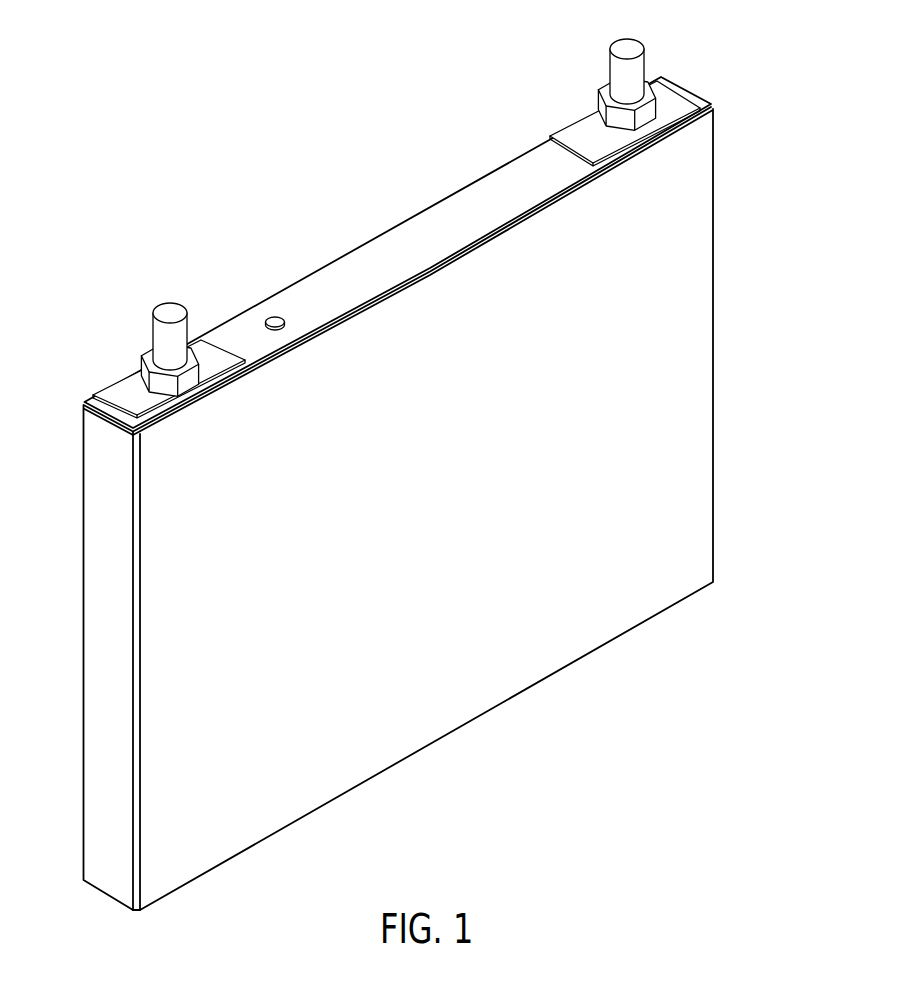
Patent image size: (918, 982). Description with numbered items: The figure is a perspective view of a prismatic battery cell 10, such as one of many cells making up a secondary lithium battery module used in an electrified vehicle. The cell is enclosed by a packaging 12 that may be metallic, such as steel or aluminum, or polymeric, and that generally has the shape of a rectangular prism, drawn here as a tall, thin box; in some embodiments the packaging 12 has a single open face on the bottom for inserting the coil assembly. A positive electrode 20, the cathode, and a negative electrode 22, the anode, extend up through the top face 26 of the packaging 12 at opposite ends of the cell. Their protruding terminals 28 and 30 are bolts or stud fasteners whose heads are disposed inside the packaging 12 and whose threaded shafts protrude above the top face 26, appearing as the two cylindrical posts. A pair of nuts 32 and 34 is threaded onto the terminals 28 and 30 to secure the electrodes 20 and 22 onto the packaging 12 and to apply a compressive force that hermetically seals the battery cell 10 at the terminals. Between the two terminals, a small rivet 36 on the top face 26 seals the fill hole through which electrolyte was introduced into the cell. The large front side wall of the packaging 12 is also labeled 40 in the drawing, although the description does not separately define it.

The battery cell 10 is at (266, 104).
The packaging 12 is at (713, 267).
The positive electrode 20 is at (186, 287).
The negative electrode 22 is at (592, 70).
The top face 26 is at (468, 208).
The terminal 28 is at (167, 301).
The terminal 30 is at (626, 38).
The nut 32 is at (141, 360).
The nut 34 is at (651, 80).
The rivet 36 is at (276, 318).
The housing side wall 40 is at (303, 838).